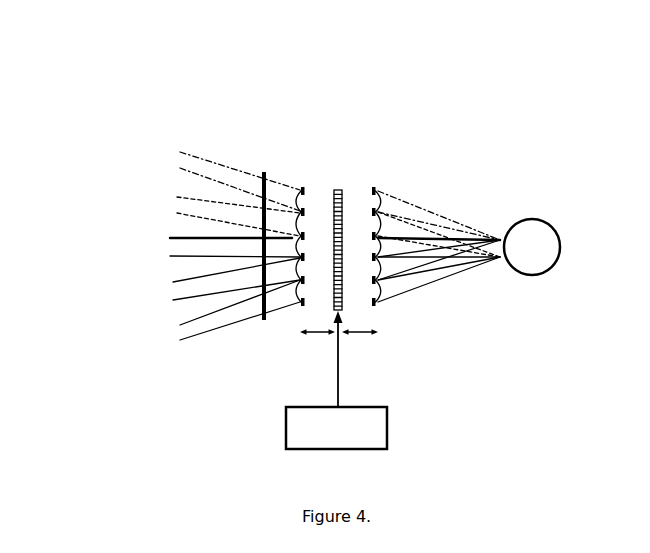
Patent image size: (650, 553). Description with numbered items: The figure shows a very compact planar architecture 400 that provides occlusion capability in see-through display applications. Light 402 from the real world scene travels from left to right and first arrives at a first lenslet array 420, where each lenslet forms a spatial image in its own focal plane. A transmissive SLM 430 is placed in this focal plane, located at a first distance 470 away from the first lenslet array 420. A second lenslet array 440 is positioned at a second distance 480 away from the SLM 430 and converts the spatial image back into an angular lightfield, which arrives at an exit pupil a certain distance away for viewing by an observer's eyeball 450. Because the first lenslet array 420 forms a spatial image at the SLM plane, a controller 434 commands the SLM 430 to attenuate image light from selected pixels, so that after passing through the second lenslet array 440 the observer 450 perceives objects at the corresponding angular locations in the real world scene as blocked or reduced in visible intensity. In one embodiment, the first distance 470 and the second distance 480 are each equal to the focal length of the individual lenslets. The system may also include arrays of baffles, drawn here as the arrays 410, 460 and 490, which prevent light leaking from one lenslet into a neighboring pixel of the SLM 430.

The compact planar architecture 400 is at (129, 76).
The light 402 is at (177, 197).
The array of baffles 410 is at (263, 172).
The first lenslet array 420 is at (297, 190).
The transmissive SLM 430 is at (337, 190).
The controller 434 is at (336, 380).
The second lenslet array 440 is at (377, 192).
The observer's eyeball 450 is at (534, 219).
The array of baffles 460 is at (300, 306).
The distance D1 470 is at (327, 333).
The distance D2 480 is at (357, 333).
The array of baffles 490 is at (374, 306).